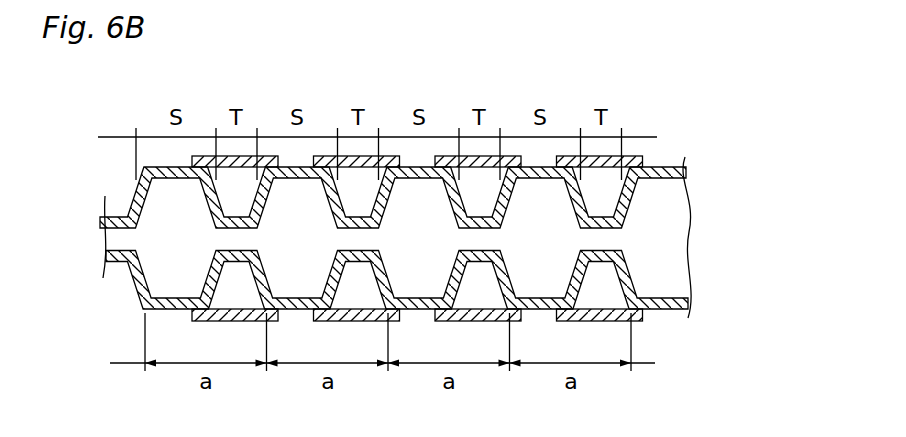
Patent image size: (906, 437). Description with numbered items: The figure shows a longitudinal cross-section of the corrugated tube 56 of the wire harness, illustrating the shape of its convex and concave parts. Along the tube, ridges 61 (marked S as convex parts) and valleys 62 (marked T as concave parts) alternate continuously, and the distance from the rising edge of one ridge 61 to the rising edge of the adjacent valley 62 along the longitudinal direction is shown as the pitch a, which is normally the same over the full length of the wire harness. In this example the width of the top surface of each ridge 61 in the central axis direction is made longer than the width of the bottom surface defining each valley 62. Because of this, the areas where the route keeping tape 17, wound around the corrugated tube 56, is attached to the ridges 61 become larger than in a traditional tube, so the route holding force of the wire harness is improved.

The route keeping tape 17 is at (633, 156).
The corrugated tube 56 is at (429, 215).
The ridge 61 is at (294, 181).
The valley 62 is at (487, 249).